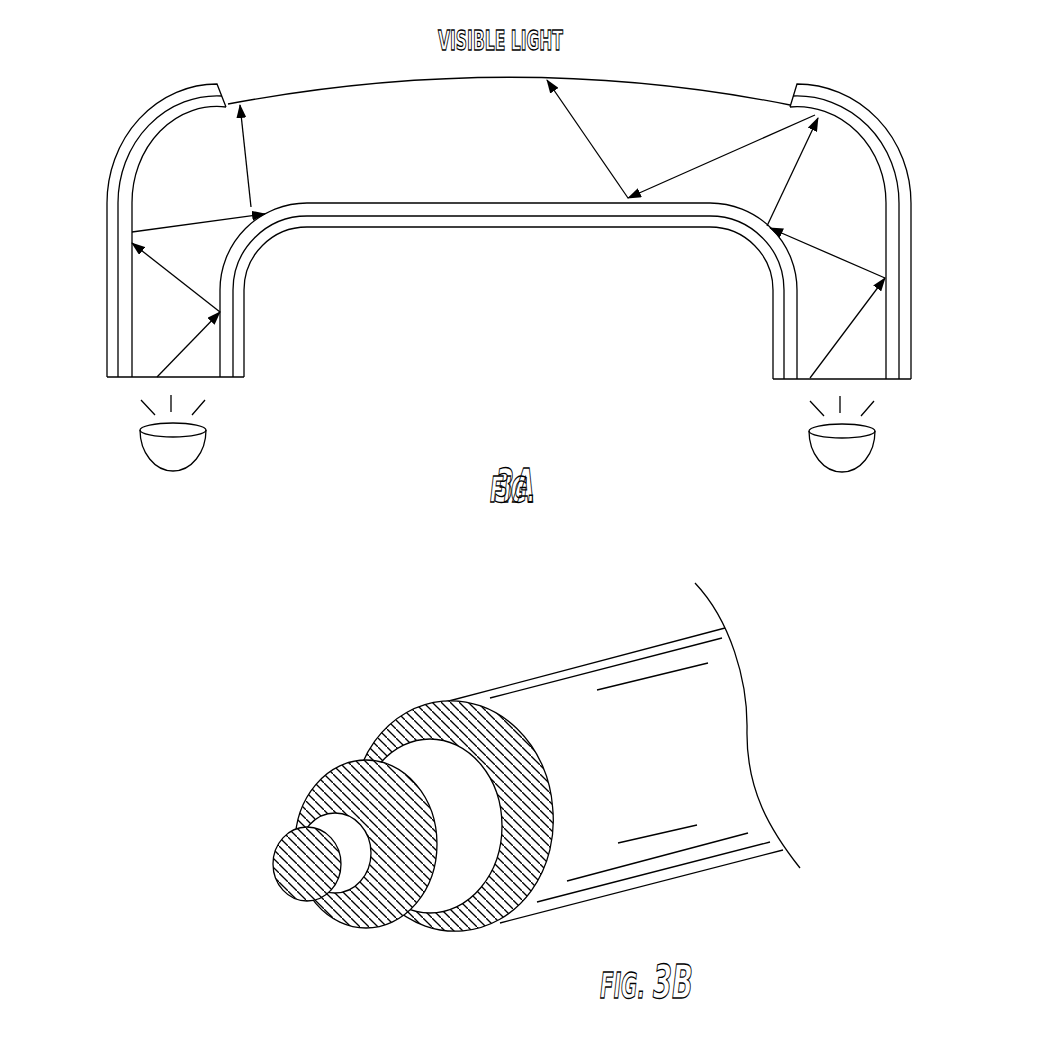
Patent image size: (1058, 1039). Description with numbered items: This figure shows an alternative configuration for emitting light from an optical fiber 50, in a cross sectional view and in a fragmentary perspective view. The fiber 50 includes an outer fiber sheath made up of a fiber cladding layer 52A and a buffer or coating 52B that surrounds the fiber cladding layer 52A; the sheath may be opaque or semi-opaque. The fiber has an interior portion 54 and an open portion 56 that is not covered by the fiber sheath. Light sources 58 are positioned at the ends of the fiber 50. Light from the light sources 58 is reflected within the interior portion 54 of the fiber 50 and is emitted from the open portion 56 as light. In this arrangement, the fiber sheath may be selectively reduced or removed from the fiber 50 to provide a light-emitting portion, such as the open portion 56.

In FIG. 3A, the optical fiber 50 is at (772, 35).
In FIG. 3A, the fiber cladding layer 52A is at (228, 341).
In FIG. 3B, the fiber cladding layer 52A is at (380, 908).
In FIG. 3A, the buffer or coating 52B is at (115, 220).
In FIG. 3B, the buffer or coating 52B is at (500, 897).
In FIG. 3A, the interior portion 54 is at (508, 229).
In FIG. 3B, the interior portion 54 is at (315, 867).
In FIG. 3A, the open portion 56 is at (288, 75).
In FIG. 3A, the light sources 58 is at (507, 453).